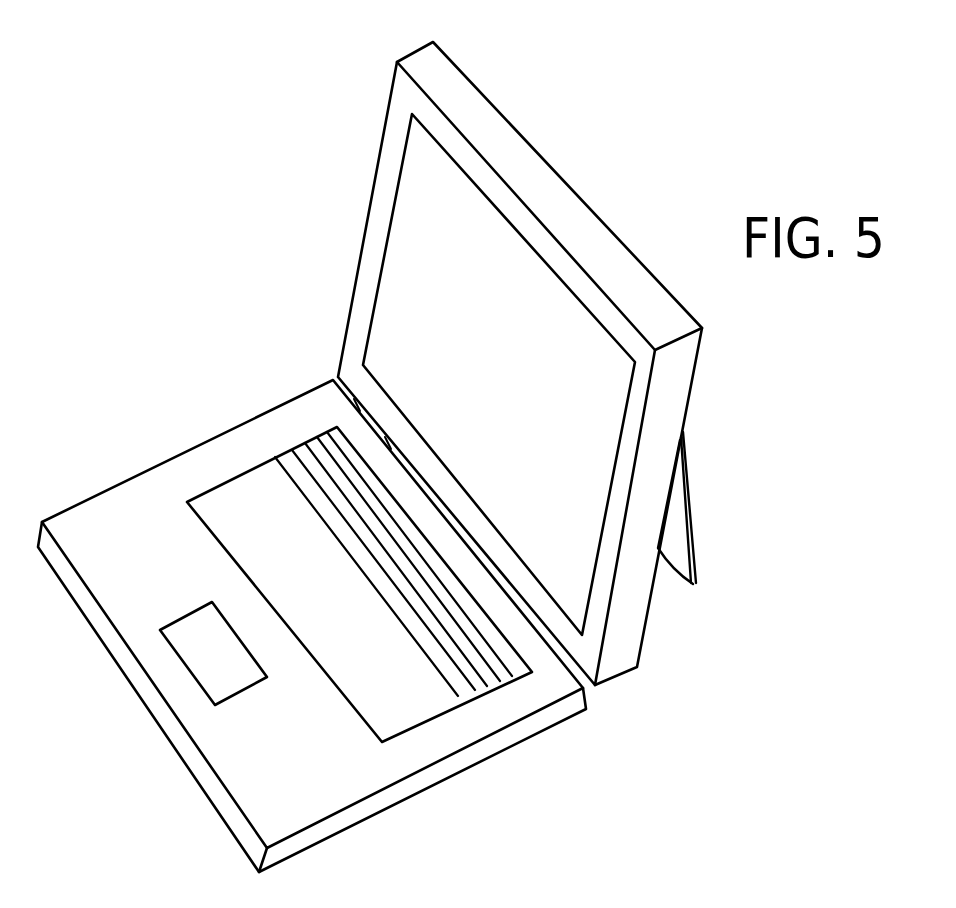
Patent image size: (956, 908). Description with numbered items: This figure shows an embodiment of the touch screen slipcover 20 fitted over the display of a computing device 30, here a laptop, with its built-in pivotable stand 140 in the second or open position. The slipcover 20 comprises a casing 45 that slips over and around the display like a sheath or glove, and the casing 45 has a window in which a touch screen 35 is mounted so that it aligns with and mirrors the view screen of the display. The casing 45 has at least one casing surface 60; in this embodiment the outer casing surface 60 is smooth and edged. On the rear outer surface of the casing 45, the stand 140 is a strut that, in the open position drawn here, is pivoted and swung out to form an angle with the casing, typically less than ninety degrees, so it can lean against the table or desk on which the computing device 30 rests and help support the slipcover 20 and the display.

The touch screen slipcover 20 is at (417, 437).
The computing device 30 is at (327, 833).
The touch screen 35 is at (390, 267).
The casing 45 is at (520, 363).
The casing surface 60 is at (580, 217).
The stand 140 is at (698, 558).